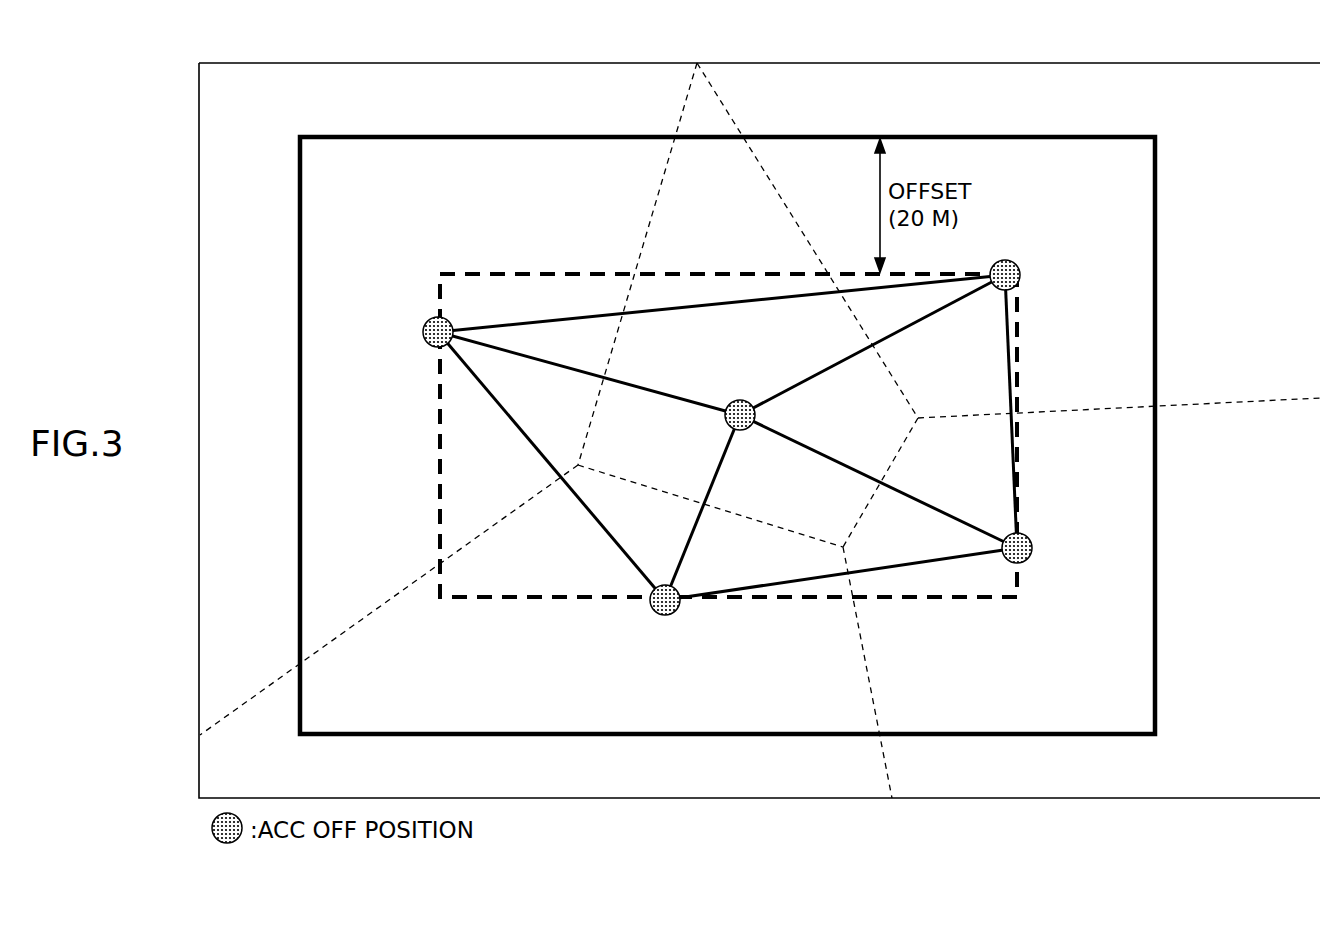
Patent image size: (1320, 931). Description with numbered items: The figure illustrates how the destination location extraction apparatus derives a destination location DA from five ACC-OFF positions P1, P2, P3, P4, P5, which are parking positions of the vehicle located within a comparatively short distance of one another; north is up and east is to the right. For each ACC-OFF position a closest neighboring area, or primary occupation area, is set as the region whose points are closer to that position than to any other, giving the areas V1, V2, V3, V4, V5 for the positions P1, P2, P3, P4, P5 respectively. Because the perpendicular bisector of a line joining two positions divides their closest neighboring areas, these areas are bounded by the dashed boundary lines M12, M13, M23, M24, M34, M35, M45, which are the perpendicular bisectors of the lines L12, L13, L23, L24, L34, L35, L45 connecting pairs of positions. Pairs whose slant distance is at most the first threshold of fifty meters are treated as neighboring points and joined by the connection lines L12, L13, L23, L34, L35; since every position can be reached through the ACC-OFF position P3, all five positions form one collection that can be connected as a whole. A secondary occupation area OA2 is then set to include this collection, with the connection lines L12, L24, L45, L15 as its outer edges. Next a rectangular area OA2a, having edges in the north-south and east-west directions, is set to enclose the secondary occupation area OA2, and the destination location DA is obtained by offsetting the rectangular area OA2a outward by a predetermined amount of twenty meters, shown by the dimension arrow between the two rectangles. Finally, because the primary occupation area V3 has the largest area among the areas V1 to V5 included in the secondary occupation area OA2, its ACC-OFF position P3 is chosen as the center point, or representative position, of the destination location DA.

The destination location DA is at (1157, 205).
The rectangular area OA2a is at (480, 274).
The secondary occupation area OA2 is at (727, 409).
The ACC-OFF position P1 is at (1015, 265).
The ACC-OFF position P2 is at (1030, 556).
The ACC-OFF position P3 is at (738, 400).
The ACC-OFF position P4 is at (651, 608).
The ACC-OFF position P5 is at (425, 325).
The connection line L12 is at (1007, 328).
The connection line L13 is at (822, 372).
The connection line L15 is at (760, 300).
The connection line L23 is at (812, 447).
The connection line L24 is at (896, 566).
The connection line L34 is at (718, 470).
The connection line L35 is at (639, 385).
The connection line L45 is at (529, 440).
The boundary line M12 is at (1250, 397).
The boundary line M13 is at (720, 95).
The boundary line M23 is at (895, 460).
The boundary line M24 is at (889, 772).
The boundary line M34 is at (641, 483).
The boundary line M35 is at (679, 95).
The boundary line M45 is at (241, 703).
The closest neighboring area V1 is at (1096, 82).
The closest neighboring area V2 is at (1104, 782).
The closest neighboring area V3 is at (702, 82).
The closest neighboring area V4 is at (568, 782).
The closest neighboring area V5 is at (412, 82).